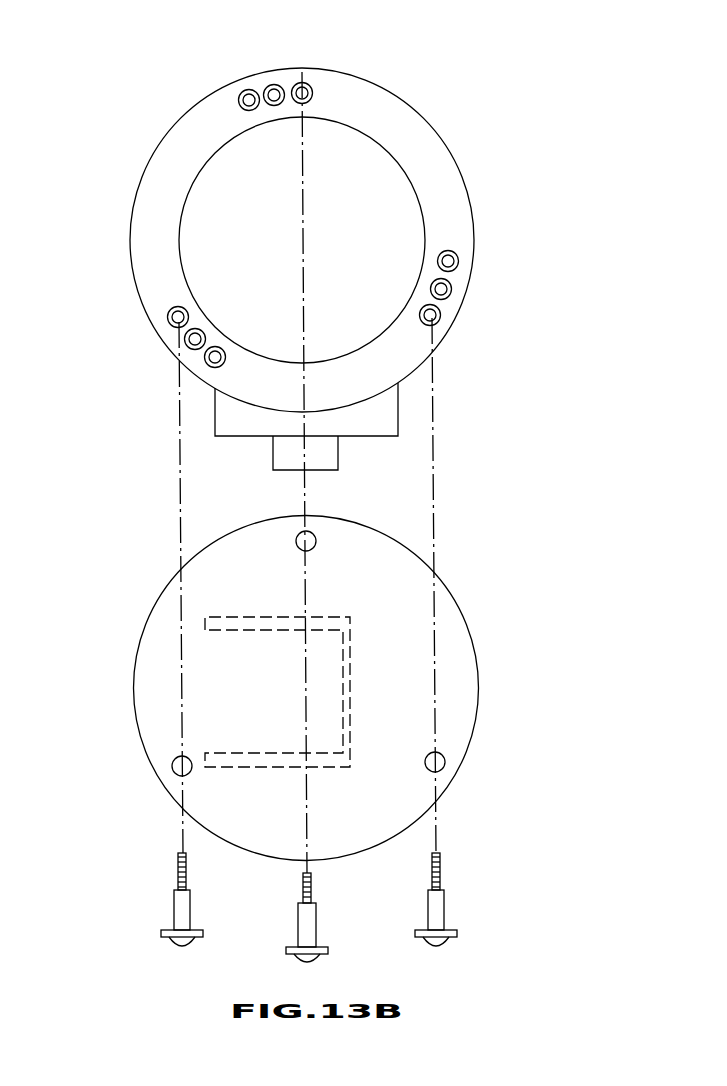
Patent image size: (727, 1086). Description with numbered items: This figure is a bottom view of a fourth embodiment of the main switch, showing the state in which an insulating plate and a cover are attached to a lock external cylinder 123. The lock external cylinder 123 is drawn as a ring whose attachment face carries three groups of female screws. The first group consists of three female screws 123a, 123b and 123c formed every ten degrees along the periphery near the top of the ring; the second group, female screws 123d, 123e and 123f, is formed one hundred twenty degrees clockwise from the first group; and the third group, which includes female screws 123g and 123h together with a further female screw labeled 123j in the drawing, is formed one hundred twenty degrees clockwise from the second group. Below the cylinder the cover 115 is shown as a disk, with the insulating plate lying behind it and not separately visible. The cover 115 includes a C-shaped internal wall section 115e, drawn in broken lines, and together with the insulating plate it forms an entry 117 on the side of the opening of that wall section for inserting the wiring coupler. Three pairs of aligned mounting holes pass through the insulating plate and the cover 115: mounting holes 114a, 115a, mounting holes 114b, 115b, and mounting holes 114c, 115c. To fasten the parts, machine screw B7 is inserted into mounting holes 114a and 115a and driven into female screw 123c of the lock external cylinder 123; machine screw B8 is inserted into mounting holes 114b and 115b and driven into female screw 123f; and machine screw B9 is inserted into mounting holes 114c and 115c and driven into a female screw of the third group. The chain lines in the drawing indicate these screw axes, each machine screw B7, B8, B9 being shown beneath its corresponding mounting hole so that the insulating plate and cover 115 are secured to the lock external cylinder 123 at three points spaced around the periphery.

The lock external cylinder 123 is at (133, 216).
The female screw 123a is at (240, 95).
The female screw 123b is at (268, 88).
The female screw 123c is at (311, 90).
The female screw 123d is at (458, 259).
The female screw 123e is at (451, 289).
The female screw 123f is at (440, 318).
The female screw 123g is at (207, 365).
The female screw 123h is at (185, 340).
The hole 123j is at (168, 317).
The cover 115 is at (145, 628).
The entry 117 is at (138, 727).
The C-shaped internal wall section 115e is at (353, 670).
The mounting hole 114a is at (430, 516).
The mounting hole 115a is at (316, 543).
The mounting hole 114b is at (533, 748).
The mounting hole 115b is at (445, 764).
The mounting hole 114c is at (124, 801).
The mounting hole 115c is at (173, 773).
The machine screw B7 is at (298, 920).
The machine screw B8 is at (428, 912).
The machine screw B9 is at (174, 915).